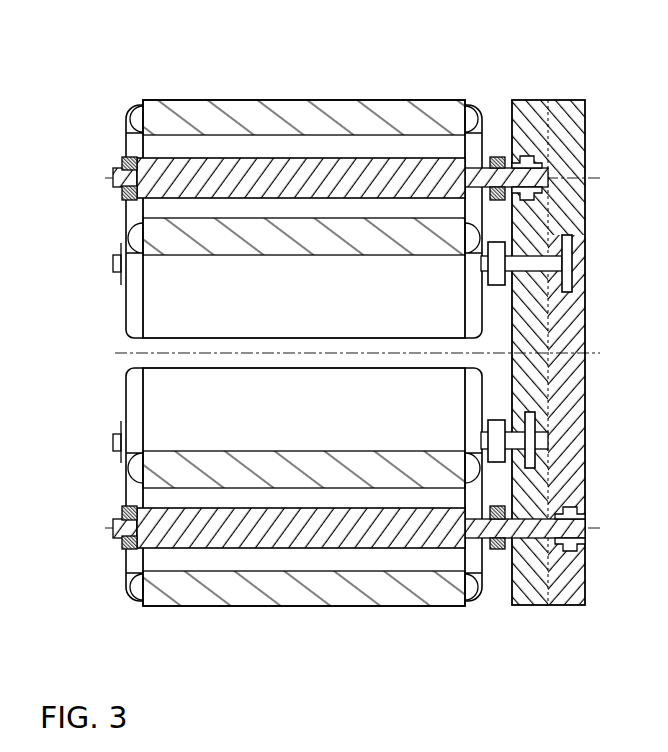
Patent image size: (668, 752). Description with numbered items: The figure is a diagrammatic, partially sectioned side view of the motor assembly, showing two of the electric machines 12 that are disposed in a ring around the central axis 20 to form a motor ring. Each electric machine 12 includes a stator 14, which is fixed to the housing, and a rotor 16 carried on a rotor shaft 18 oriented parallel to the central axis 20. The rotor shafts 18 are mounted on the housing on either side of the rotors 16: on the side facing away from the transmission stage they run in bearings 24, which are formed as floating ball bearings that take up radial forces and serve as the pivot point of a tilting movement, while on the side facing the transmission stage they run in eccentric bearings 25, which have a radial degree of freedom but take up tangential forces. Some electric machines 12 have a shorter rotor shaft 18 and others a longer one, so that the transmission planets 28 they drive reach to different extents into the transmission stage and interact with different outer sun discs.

The electric machine 12 is at (155, 88).
The stator 14 is at (218, 113).
The rotor 16 is at (290, 148).
The rotor shaft 18 is at (507, 165).
The central axis 20 is at (597, 350).
The bearing 24 is at (121, 243).
The eccentric bearing 25 is at (495, 157).
The transmission planet 28 is at (531, 150).